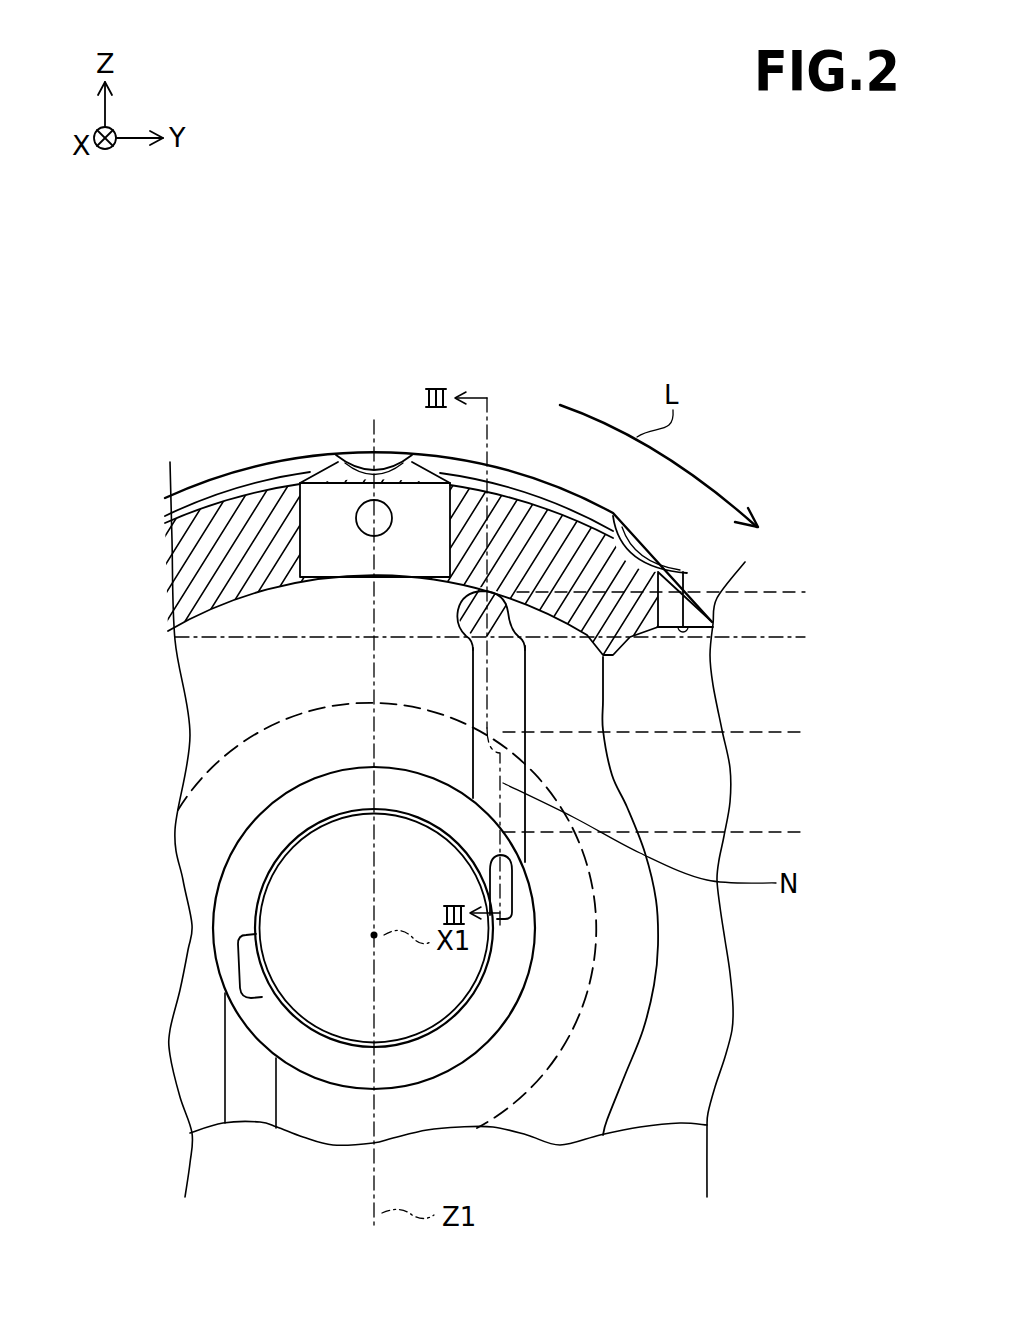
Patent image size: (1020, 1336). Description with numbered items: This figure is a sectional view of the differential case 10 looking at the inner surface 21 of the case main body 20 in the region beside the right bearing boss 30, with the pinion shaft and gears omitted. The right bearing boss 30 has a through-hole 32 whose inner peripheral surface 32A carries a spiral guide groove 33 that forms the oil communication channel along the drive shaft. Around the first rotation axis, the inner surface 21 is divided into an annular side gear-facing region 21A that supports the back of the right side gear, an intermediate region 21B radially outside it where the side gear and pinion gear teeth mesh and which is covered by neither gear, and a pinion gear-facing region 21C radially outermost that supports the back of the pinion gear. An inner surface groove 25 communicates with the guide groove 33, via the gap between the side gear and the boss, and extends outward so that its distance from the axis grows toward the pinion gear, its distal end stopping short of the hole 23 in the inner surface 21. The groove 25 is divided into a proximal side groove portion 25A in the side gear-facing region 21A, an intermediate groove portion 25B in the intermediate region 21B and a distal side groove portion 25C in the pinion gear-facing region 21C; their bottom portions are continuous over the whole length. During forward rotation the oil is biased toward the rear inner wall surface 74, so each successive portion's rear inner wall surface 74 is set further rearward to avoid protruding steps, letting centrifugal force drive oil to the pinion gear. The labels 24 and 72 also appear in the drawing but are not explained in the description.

The differential case 10 is at (505, 273).
The case main body 20 is at (503, 513).
The inner surface 21 is at (75, 618).
The side gear-facing region 21A is at (212, 823).
The intermediate region 21B is at (212, 713).
The pinion gear-facing region 21C is at (172, 638).
The hole 23 is at (302, 506).
The second roller 24 is at (703, 598).
The inner surface groove 25 is at (876, 598).
The proximal side groove portion 25A is at (803, 734).
The intermediate groove portion 25B is at (803, 639).
The distal side groove portion 25C is at (803, 593).
The right bearing boss 30 is at (490, 972).
The through-hole 32 is at (356, 985).
The inner peripheral surface 32A is at (452, 1007).
The guide groove 33 is at (247, 967).
The groove 72 is at (512, 683).
The rear inner wall surface 74 is at (477, 697).